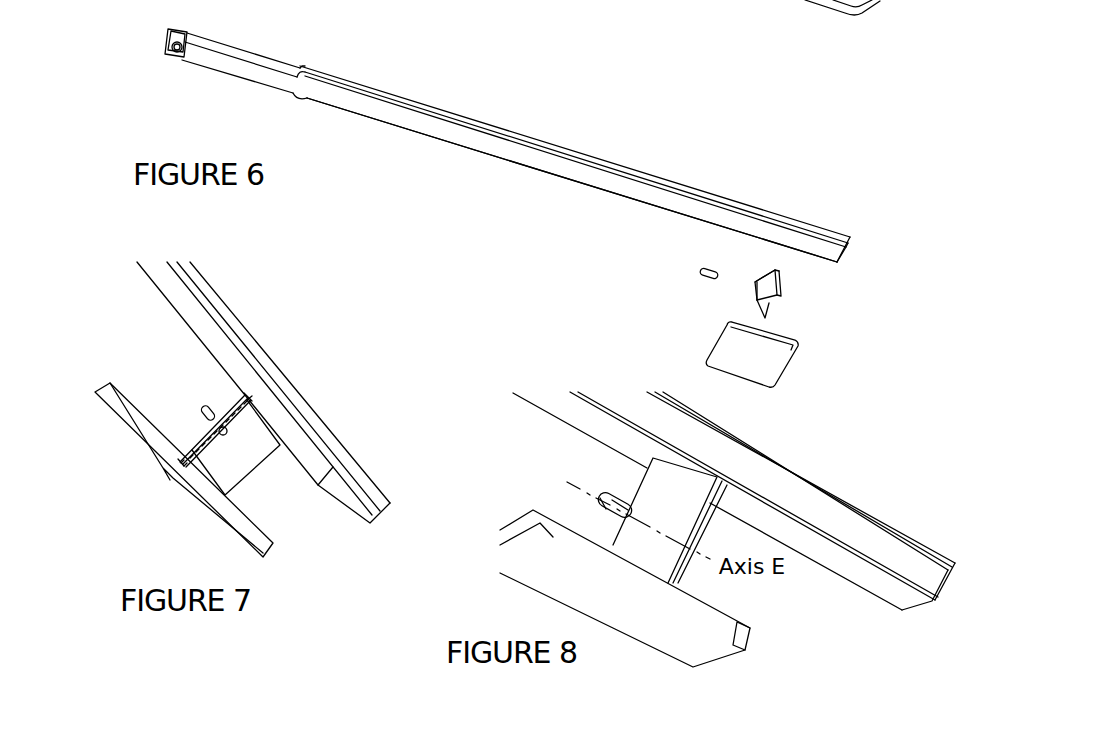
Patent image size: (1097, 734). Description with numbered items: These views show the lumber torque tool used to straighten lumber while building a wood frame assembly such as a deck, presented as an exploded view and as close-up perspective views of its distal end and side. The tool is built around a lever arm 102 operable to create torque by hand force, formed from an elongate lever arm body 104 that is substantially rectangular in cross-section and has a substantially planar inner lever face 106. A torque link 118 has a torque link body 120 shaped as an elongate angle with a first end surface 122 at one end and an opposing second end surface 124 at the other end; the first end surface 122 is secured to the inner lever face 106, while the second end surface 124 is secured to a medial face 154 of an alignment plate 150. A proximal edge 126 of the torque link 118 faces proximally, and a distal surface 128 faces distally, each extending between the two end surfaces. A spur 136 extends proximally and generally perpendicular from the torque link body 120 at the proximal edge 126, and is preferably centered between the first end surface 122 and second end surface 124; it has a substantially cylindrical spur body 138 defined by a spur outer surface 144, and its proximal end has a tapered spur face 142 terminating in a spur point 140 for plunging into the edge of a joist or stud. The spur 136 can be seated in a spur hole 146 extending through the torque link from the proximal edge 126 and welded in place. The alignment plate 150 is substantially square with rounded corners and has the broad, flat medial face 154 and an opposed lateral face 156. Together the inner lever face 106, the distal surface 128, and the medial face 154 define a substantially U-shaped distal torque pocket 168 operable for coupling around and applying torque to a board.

In FIG. 6, the lever arm 102 is at (507, 145).
In FIG. 6, the lever arm body 104 is at (630, 160).
In FIG. 6, the inner lever face 106 is at (492, 149).
In FIG. 6, the torque link 118 is at (711, 274).
In FIG. 6, the torque link body 120 is at (751, 274).
In FIG. 6, the first end surface 122 is at (766, 262).
In FIG. 6, the second end surface 124 is at (754, 311).
In FIG. 6, the proximal edge 126 is at (753, 291).
In FIG. 7, the distal surface 128 is at (232, 396).
In FIG. 6, the spur 136 is at (688, 265).
In FIG. 7, the spur 136 is at (192, 395).
In FIG. 8, the spur body 138 is at (621, 488).
In FIG. 8, the spur point 140 is at (525, 470).
In FIG. 8, the tapered spur face 142 is at (598, 494).
In FIG. 8, the spur outer surface 144 is at (613, 510).
In FIG. 7, the spur hole 146 is at (235, 432).
In FIG. 6, the alignment plate 150 is at (800, 378).
In FIG. 7, the alignment plate 150 is at (157, 470).
In FIG. 7, the medial face 154 is at (163, 437).
In FIG. 8, the lateral face 156 is at (543, 577).
In FIG. 8, the distal torque pocket 168 is at (800, 598).